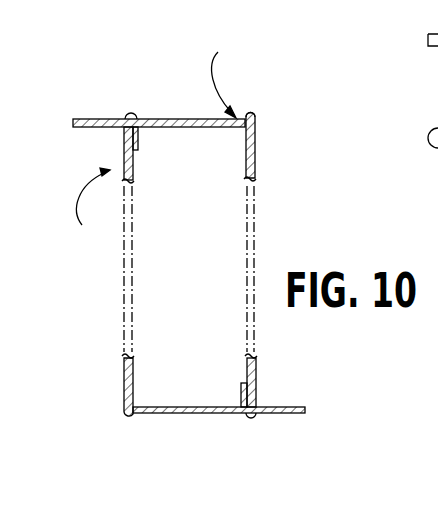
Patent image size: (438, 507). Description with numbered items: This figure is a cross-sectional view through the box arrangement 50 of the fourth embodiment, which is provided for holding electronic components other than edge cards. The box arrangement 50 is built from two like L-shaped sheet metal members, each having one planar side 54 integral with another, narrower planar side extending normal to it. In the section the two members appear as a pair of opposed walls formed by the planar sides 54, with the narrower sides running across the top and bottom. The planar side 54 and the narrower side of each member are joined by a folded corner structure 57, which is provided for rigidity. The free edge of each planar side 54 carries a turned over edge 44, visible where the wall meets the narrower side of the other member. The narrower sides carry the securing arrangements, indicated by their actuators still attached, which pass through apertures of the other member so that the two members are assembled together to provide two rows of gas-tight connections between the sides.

The turned over edge 44 is at (138, 138).
The box arrangement 50 is at (158, 143).
The planar side 54 is at (256, 133).
The folded corner structure 57 is at (256, 112).